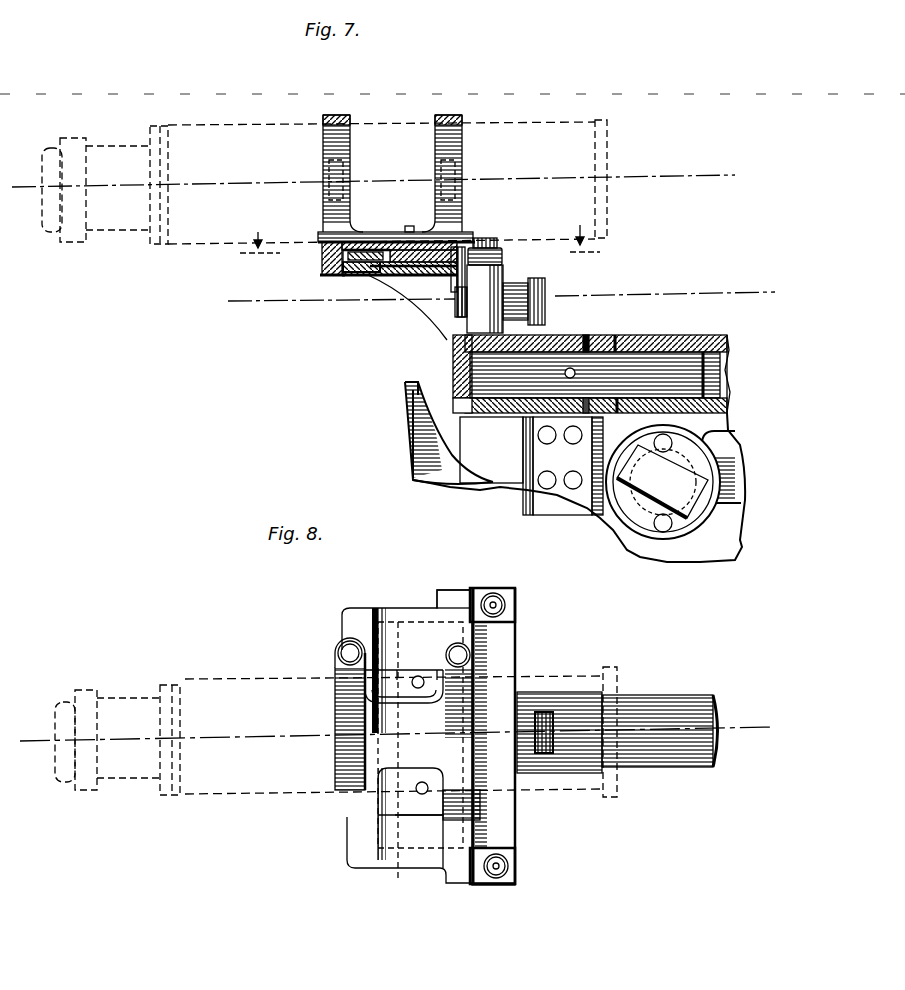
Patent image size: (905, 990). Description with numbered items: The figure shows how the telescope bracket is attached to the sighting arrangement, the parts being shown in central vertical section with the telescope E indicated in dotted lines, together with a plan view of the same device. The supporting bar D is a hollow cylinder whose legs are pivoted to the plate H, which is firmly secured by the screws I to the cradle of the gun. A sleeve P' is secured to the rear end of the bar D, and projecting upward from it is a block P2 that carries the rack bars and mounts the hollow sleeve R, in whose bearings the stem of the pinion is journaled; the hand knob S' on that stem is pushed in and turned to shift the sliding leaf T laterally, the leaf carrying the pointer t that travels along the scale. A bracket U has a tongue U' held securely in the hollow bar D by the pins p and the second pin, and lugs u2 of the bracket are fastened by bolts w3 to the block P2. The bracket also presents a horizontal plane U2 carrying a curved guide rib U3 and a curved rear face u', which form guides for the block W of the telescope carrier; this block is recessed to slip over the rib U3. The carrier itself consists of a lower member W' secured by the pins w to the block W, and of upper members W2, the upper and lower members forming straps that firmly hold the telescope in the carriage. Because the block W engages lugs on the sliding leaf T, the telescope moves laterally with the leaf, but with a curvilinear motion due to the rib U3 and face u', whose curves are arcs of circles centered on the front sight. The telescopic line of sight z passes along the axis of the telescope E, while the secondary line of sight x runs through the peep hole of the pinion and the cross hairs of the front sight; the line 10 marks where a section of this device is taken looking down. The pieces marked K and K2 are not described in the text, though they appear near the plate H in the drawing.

In FIG. 7, the telescope E is at (324, 182).
In FIG. 8, the telescope E is at (336, 732).
In FIG. 7, the telescopic line of sight z is at (376, 181).
In FIG. 7, the secondary line of sight x is at (492, 296).
In FIG. 7, the section line 10 is at (415, 245).
In FIG. 7, the upper members of telescope carrier W2 is at (440, 128).
In FIG. 8, the upper members of telescope carrier W2 is at (375, 772).
In FIG. 7, the block W is at (420, 222).
In FIG. 8, the block W is at (404, 714).
In FIG. 7, the lower member of telescope carrier W' is at (400, 243).
In FIG. 8, the lower member of telescope carrier W' is at (411, 735).
In FIG. 7, the pins w is at (409, 226).
In FIG. 8, the pins w is at (418, 676).
In FIG. 7, the curved rear face u' is at (311, 260).
In FIG. 8, the curved rear face u' is at (336, 697).
In FIG. 7, the bracket U is at (400, 289).
In FIG. 7, the horizontal plane U2 is at (370, 268).
In FIG. 8, the horizontal plane U2 is at (437, 870).
In FIG. 7, the curved guide rib U3 is at (450, 272).
In FIG. 8, the curved guide rib U3 is at (455, 590).
In FIG. 7, the tongue U' is at (595, 375).
In FIG. 7, the pointer t is at (467, 263).
In FIG. 7, the bolts w3 is at (497, 243).
In FIG. 8, the bolts w3 is at (505, 598).
In FIG. 7, the hollow sleeve R is at (510, 286).
In FIG. 8, the hollow sleeve R is at (528, 700).
In FIG. 7, the hand knob S' is at (548, 297).
In FIG. 8, the hand knob S' is at (564, 693).
In FIG. 7, the sliding leaf T is at (455, 268).
In FIG. 7, the block P2 is at (475, 315).
In FIG. 8, the block P2 is at (517, 805).
In FIG. 7, the sleeve P' is at (591, 356).
In FIG. 7, the pin p is at (592, 334).
In FIG. 7, the supporting bar D is at (708, 345).
In FIG. 8, the supporting bar D is at (688, 702).
In FIG. 7, the lever K is at (415, 448).
In FIG. 7, the lever end K2 is at (405, 393).
In FIG. 7, the screws I is at (625, 493).
In FIG. 7, the plate H is at (718, 550).
In FIG. 8, the lugs u2 is at (494, 592).